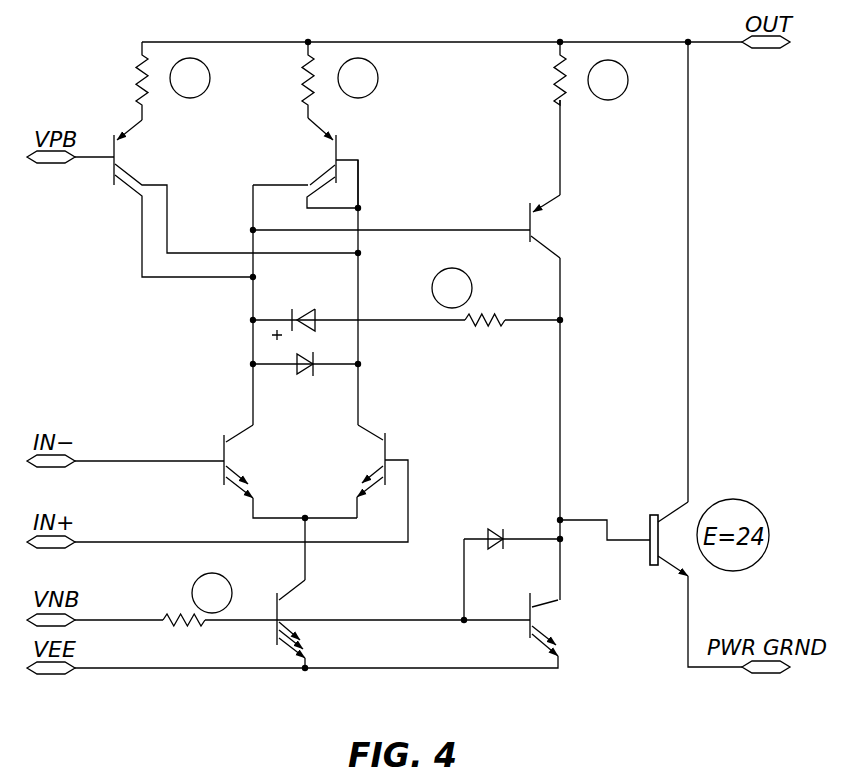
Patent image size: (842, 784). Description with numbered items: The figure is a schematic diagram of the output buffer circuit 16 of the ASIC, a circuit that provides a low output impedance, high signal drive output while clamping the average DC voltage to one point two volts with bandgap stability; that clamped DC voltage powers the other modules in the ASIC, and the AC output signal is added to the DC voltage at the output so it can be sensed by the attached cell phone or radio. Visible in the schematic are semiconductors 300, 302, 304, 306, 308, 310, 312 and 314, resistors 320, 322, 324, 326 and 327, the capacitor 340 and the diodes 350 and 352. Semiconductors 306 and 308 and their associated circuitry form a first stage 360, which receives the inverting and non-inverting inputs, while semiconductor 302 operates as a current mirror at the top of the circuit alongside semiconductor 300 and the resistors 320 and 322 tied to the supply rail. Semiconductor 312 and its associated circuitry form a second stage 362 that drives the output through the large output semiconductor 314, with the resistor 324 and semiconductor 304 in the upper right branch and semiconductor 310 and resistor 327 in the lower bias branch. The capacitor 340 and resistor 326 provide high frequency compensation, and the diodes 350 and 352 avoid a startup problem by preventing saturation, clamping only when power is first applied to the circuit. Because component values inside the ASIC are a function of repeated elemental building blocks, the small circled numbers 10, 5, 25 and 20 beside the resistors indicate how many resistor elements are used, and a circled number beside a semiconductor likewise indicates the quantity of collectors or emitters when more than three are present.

The output buffer circuit 16 is at (110, 67).
The semiconductor 300 is at (112, 170).
The semiconductor 302 is at (314, 135).
The PNP transistor 304 is at (548, 214).
The semiconductor 306 is at (248, 432).
The semiconductor 308 is at (388, 452).
The current source NPN transistor 310 is at (275, 628).
The semiconductor 312 is at (530, 628).
The semiconductor 314 is at (650, 556).
The resistor 320 is at (141, 90).
The resistor 322 is at (301, 70).
The resistor 324 is at (552, 90).
The resistor 326 is at (484, 325).
The resistor 327 is at (196, 617).
The capacitor 340 is at (297, 310).
The diode 350 is at (306, 374).
The diode 352 is at (498, 548).
The first stage 360 is at (220, 360).
The second stage 362 is at (720, 298).
The resistor value marker 10 is at (274, 78).
The resistor value marker 5 is at (608, 80).
The resistor value marker 25 is at (452, 288).
The resistor value marker 20 is at (212, 593).